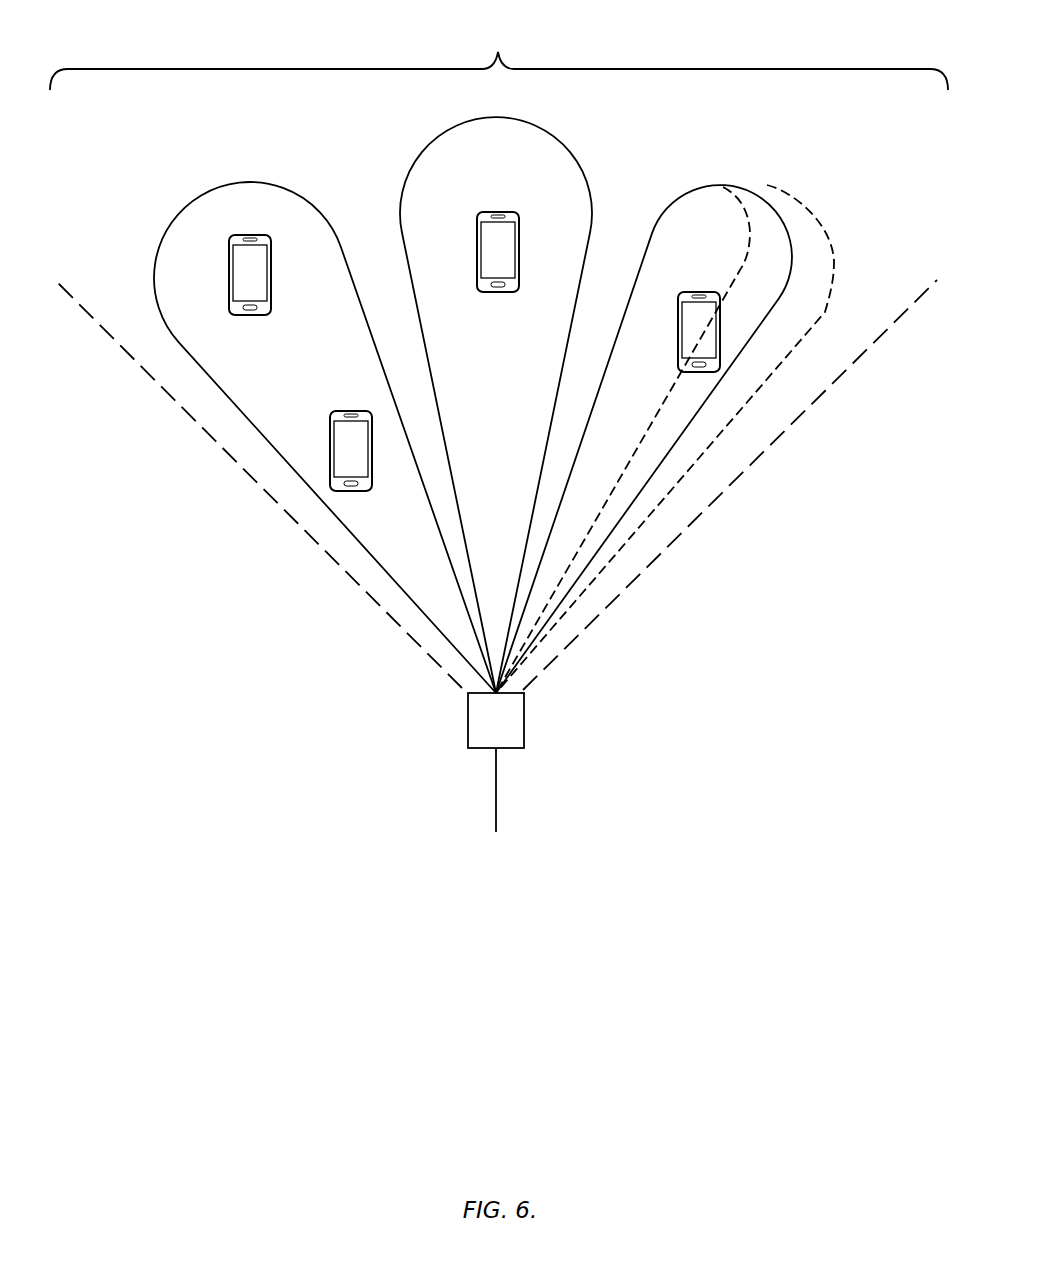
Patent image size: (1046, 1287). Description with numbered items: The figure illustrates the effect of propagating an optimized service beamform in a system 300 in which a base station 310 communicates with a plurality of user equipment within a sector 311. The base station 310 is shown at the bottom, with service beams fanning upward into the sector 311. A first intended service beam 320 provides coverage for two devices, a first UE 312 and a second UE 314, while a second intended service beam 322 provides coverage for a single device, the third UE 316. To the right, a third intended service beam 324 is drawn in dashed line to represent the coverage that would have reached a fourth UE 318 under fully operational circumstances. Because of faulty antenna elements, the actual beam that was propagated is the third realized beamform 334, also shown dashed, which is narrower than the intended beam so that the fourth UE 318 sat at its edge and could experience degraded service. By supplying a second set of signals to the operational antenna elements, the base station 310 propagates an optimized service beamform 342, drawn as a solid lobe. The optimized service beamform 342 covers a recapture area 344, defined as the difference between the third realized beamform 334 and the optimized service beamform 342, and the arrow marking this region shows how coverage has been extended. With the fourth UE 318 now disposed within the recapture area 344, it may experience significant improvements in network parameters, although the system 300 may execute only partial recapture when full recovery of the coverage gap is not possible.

The system 300 is at (852, 774).
The base station 310 is at (512, 781).
The sector 311 is at (499, 51).
The first UE 312 is at (250, 315).
The second UE 314 is at (350, 491).
The third UE 316 is at (497, 292).
The fourth UE 318 is at (703, 291).
The first intended service beam 320 is at (322, 207).
The second intended service beam 322 is at (587, 167).
The third intended service beam 324 is at (835, 275).
The third realized beamform 334 is at (748, 218).
The optimized service beamform 342 is at (695, 188).
The recapture area 344 is at (758, 280).